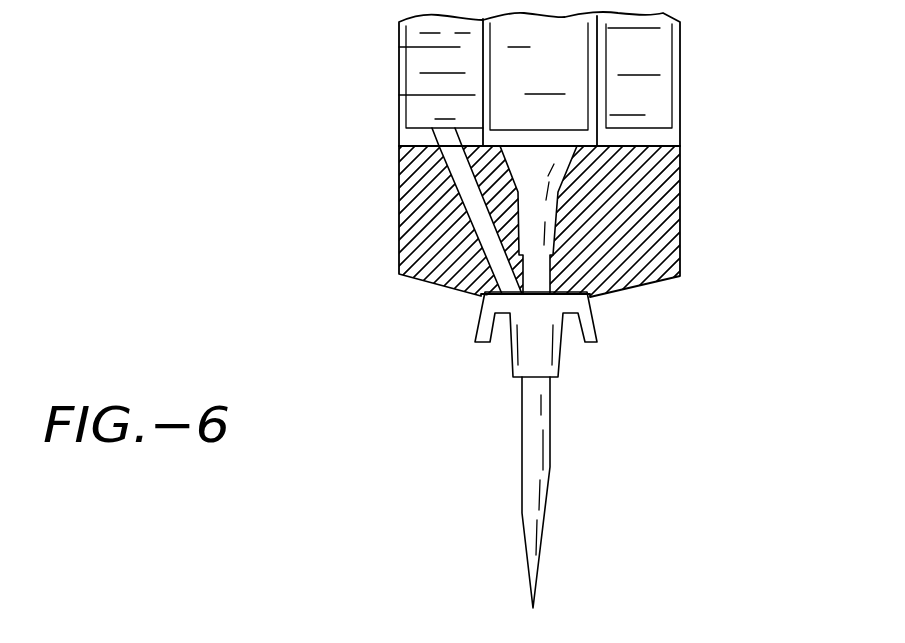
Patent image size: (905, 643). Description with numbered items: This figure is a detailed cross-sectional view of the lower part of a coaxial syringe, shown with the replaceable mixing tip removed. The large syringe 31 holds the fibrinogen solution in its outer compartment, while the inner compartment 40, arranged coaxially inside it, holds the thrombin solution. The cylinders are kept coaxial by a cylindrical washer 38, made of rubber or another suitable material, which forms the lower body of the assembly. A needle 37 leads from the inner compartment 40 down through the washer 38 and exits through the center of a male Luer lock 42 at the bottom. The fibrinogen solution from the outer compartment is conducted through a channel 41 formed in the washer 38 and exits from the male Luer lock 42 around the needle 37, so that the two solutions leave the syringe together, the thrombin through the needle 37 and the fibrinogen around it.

The large syringe 31 is at (697, 82).
The needle 37 is at (570, 210).
The cylindrical washer 38 is at (645, 272).
The inner compartment 40 is at (572, 65).
The channel 41 is at (480, 228).
The male Luer lock 42 is at (576, 355).